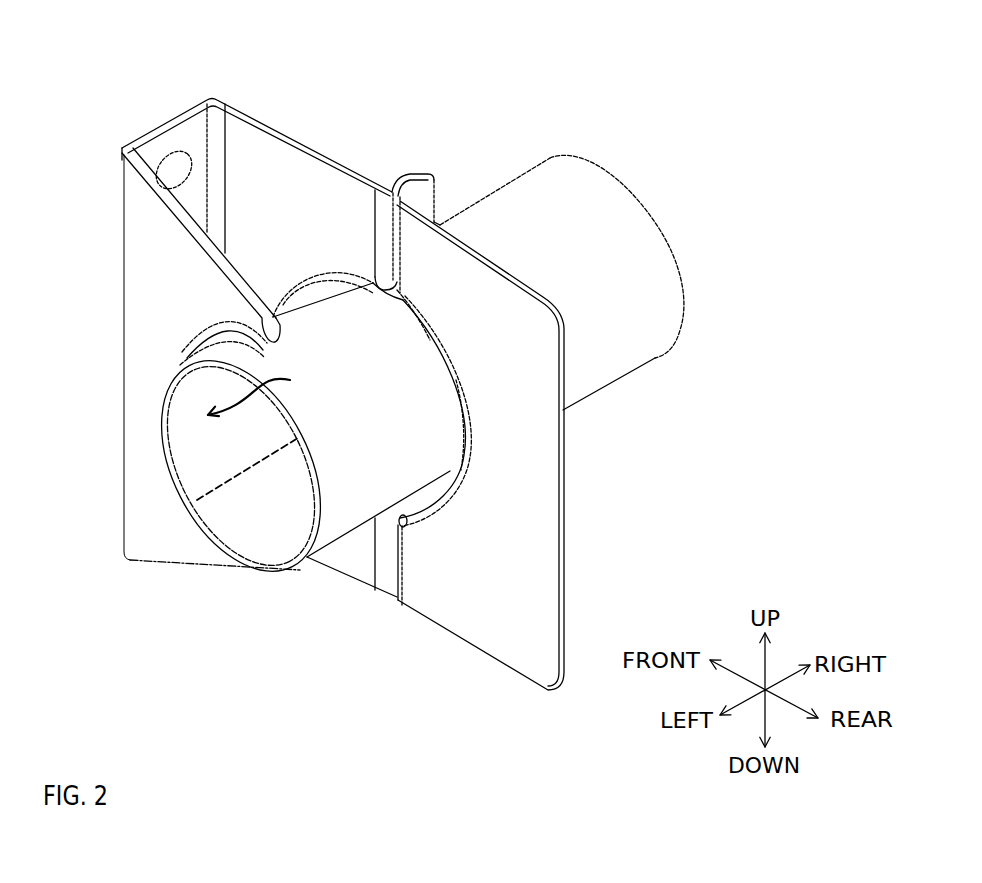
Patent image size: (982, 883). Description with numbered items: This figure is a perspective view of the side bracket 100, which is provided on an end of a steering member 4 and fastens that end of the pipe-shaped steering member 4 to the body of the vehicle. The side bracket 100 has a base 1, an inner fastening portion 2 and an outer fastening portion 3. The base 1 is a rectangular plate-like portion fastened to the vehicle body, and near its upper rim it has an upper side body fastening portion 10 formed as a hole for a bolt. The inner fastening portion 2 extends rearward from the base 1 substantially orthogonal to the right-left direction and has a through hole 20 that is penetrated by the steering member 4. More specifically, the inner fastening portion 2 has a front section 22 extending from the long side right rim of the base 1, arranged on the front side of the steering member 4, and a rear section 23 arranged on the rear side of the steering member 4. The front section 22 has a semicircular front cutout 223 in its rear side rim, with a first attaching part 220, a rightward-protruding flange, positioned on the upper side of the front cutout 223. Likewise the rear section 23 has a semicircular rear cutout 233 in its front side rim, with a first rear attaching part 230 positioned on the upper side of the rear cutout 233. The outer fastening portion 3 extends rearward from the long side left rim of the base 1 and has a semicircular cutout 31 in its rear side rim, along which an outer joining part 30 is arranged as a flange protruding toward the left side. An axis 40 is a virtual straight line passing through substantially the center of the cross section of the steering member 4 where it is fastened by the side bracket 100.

The side bracket 100 is at (122, 108).
The base 1 is at (187, 133).
The inner fastening portion 2 is at (577, 520).
The outer fastening portion 3 is at (140, 257).
The steering member 4 is at (592, 377).
The upper side body fastening portion 10 is at (168, 172).
The through hole 20 is at (440, 360).
The front section 22 is at (293, 157).
The rear section 23 is at (500, 280).
The outer joining part 30 is at (212, 345).
The cutout 31 is at (262, 390).
The axis 40 is at (237, 477).
The first attaching part 220 is at (395, 180).
The front cutout 223 is at (317, 273).
The first rear attaching part 230 is at (420, 195).
The rear cutout 233 is at (440, 433).